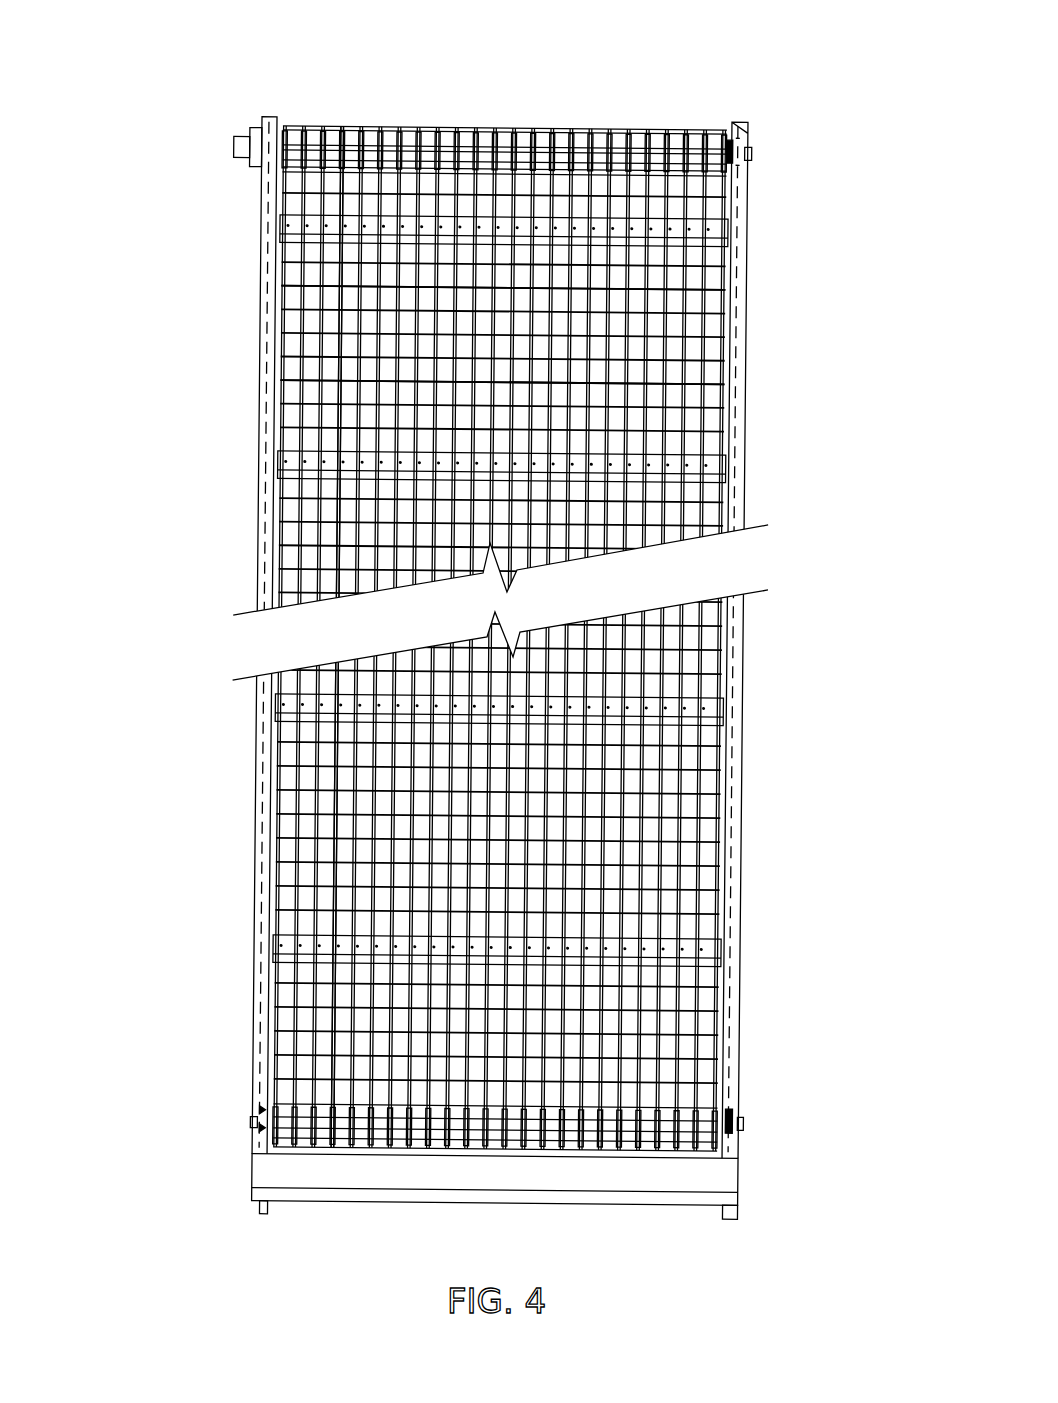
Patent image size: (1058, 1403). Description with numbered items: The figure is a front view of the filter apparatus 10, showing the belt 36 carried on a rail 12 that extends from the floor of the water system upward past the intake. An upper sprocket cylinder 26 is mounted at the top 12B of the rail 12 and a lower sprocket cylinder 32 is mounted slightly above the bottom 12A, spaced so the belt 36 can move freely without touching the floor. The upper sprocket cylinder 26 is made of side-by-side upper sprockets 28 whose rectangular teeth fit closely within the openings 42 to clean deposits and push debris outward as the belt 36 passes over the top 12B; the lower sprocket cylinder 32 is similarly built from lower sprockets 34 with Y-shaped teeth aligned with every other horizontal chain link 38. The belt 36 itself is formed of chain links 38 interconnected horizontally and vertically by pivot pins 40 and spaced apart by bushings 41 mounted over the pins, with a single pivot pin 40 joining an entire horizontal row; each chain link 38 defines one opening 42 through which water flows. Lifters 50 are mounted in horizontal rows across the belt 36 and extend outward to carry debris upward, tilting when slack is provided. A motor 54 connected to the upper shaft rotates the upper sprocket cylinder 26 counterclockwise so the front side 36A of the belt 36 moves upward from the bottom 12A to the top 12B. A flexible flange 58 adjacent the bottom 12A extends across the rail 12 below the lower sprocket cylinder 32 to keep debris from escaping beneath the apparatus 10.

The filter apparatus 10 is at (493, 93).
The rail 12 is at (740, 1002).
The bottom of the rail 12A is at (260, 1213).
The top of the rail 12B is at (270, 200).
The upper sprocket cylinder 26 is at (725, 162).
The upper sprockets 28 is at (748, 122).
The lower sprocket cylinder 32 is at (705, 1115).
The lower sprockets 34 is at (280, 1105).
The belt 36 is at (378, 270).
The front side of the belt 36A is at (350, 367).
The chain links 38 is at (715, 375).
The pivot pins 40 is at (735, 660).
The bushings 41 is at (693, 290).
The openings 42 is at (707, 423).
The lifters 50 is at (705, 945).
The motor 54 is at (250, 130).
The flange 58 is at (700, 1175).